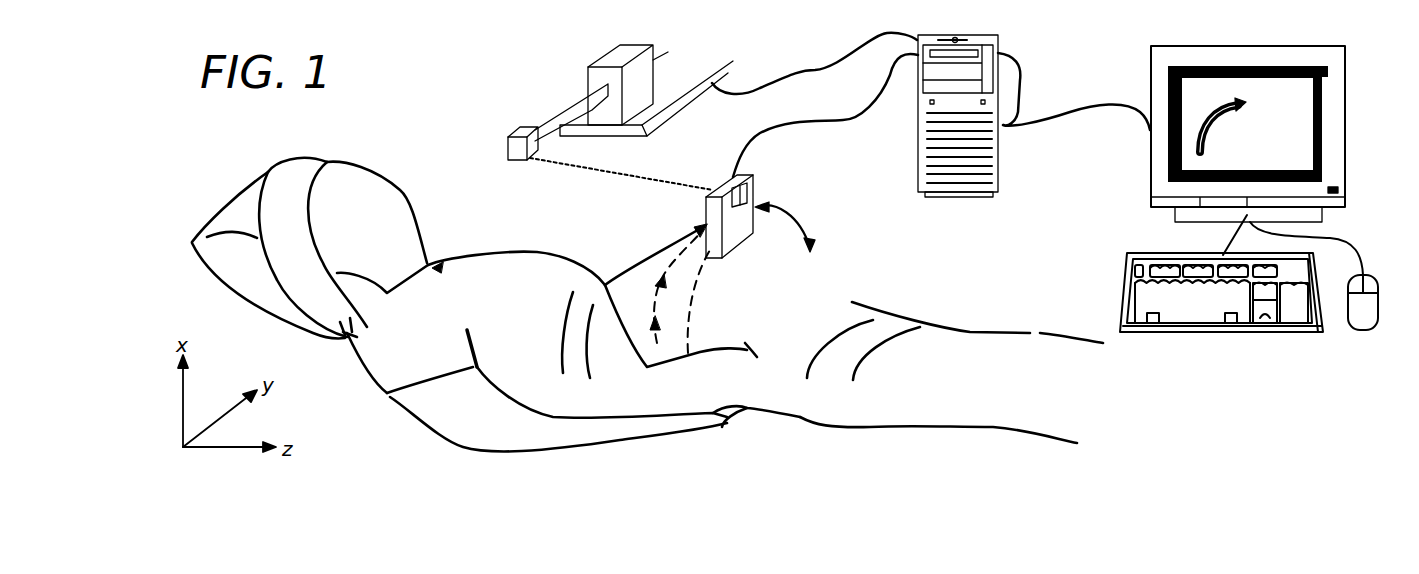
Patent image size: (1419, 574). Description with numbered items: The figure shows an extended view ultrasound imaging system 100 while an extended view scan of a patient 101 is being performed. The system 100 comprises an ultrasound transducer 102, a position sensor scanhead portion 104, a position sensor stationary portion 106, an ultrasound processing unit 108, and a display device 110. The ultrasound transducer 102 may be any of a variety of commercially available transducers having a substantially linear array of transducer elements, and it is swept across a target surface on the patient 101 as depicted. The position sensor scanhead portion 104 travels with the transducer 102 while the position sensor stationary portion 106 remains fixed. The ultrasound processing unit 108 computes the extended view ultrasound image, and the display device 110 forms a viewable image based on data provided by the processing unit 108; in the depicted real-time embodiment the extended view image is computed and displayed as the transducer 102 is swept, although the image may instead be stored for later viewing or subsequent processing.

The extended view ultrasound imaging system 100 is at (1183, 400).
The patient 101 is at (423, 417).
The ultrasound transducer 102 is at (702, 212).
The position sensor scanhead portion 104 is at (752, 188).
The position sensor stationary portion 106 is at (515, 130).
The ultrasound processing unit 108 is at (1000, 53).
The display device 110 is at (1147, 158).